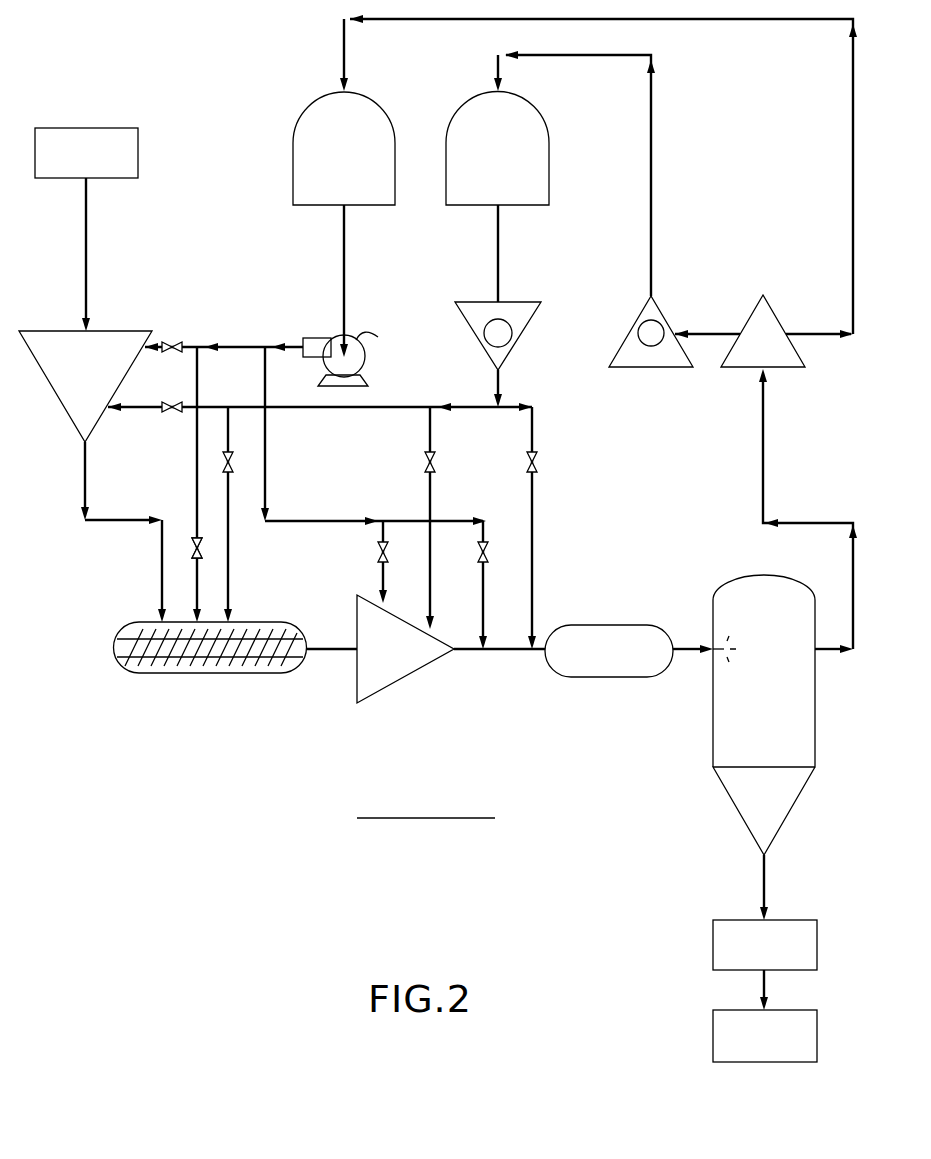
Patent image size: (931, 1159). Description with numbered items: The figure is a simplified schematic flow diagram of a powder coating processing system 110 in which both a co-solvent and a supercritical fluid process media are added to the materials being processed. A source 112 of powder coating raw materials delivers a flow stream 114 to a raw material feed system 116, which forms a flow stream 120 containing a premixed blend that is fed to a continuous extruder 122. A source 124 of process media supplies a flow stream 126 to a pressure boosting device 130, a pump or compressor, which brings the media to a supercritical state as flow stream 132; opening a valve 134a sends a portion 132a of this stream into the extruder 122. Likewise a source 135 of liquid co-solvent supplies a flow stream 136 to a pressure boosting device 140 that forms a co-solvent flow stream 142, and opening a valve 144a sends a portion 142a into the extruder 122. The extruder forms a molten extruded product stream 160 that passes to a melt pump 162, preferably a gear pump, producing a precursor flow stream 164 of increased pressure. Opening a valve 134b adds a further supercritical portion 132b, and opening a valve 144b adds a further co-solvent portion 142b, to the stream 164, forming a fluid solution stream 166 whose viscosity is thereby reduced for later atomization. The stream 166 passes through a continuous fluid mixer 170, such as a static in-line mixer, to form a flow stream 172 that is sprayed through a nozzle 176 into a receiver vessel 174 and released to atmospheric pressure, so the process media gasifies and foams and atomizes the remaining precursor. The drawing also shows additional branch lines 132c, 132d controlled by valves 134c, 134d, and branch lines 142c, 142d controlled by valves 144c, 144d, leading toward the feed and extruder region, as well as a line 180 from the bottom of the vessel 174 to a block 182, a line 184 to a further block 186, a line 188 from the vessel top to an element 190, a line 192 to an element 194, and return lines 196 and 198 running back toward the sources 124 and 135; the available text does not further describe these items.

The powder coating processing system 110 is at (427, 818).
The source of powder coating raw materials 112 is at (86, 153).
The flow stream of raw materials 114 is at (87, 218).
The raw material feed system 116 is at (85, 386).
The flow stream of premixed blend 120 is at (100, 521).
The continuous extruder 122 is at (172, 673).
The source of process media 124 is at (497, 149).
The flow stream of process media 126 is at (500, 240).
The pressure boosting device 130 is at (498, 335).
The supercritical fluid process media flow stream 132 is at (502, 385).
The supercritical fluid flow stream portion 132a is at (231, 577).
The supercritical fluid flow stream portion 132b is at (535, 592).
The resin branch line 132c is at (142, 409).
The resin branch line 132d is at (432, 583).
The valve 134a is at (222, 460).
The valve 134b is at (527, 462).
The resin valve 134c is at (176, 403).
The resin valve 134d is at (425, 462).
The source of co-solvent 135 is at (344, 148).
The flow stream of co-solvent 136 is at (346, 240).
The pressure boosting device 140 is at (350, 359).
The co-solvent flow stream 142 is at (289, 343).
The co-solvent flow stream portion 142a is at (197, 597).
The co-solvent flow stream portion 142b is at (481, 610).
The water branch line 142c is at (161, 343).
The water branch line 142d is at (381, 583).
The valve 144a is at (192, 538).
The valve 144b is at (478, 552).
The water valve 144c is at (173, 343).
The water valve 144d is at (378, 552).
The flow stream of extruded product 160 is at (343, 651).
The melt pump 162 is at (405, 649).
The powder coating precursor flow stream of increased pressure 164 is at (472, 651).
The powder coating precursor flow stream 166 is at (539, 651).
The continuous fluid mixer 170 is at (609, 651).
The flow stream 172 is at (683, 651).
The receiver vessel 174 is at (780, 687).
The nozzle 176 is at (716, 640).
The product outlet line 180 is at (768, 878).
The dryer 182 is at (781, 956).
The dryer outlet line 184 is at (768, 990).
The product collector 186 is at (781, 1047).
The vapor line 188 is at (840, 521).
The condenser 190 is at (763, 331).
The condensate line 192 is at (717, 332).
The return pump 194 is at (651, 331).
The resin return line 196 is at (653, 243).
The water return line 198 is at (850, 243).